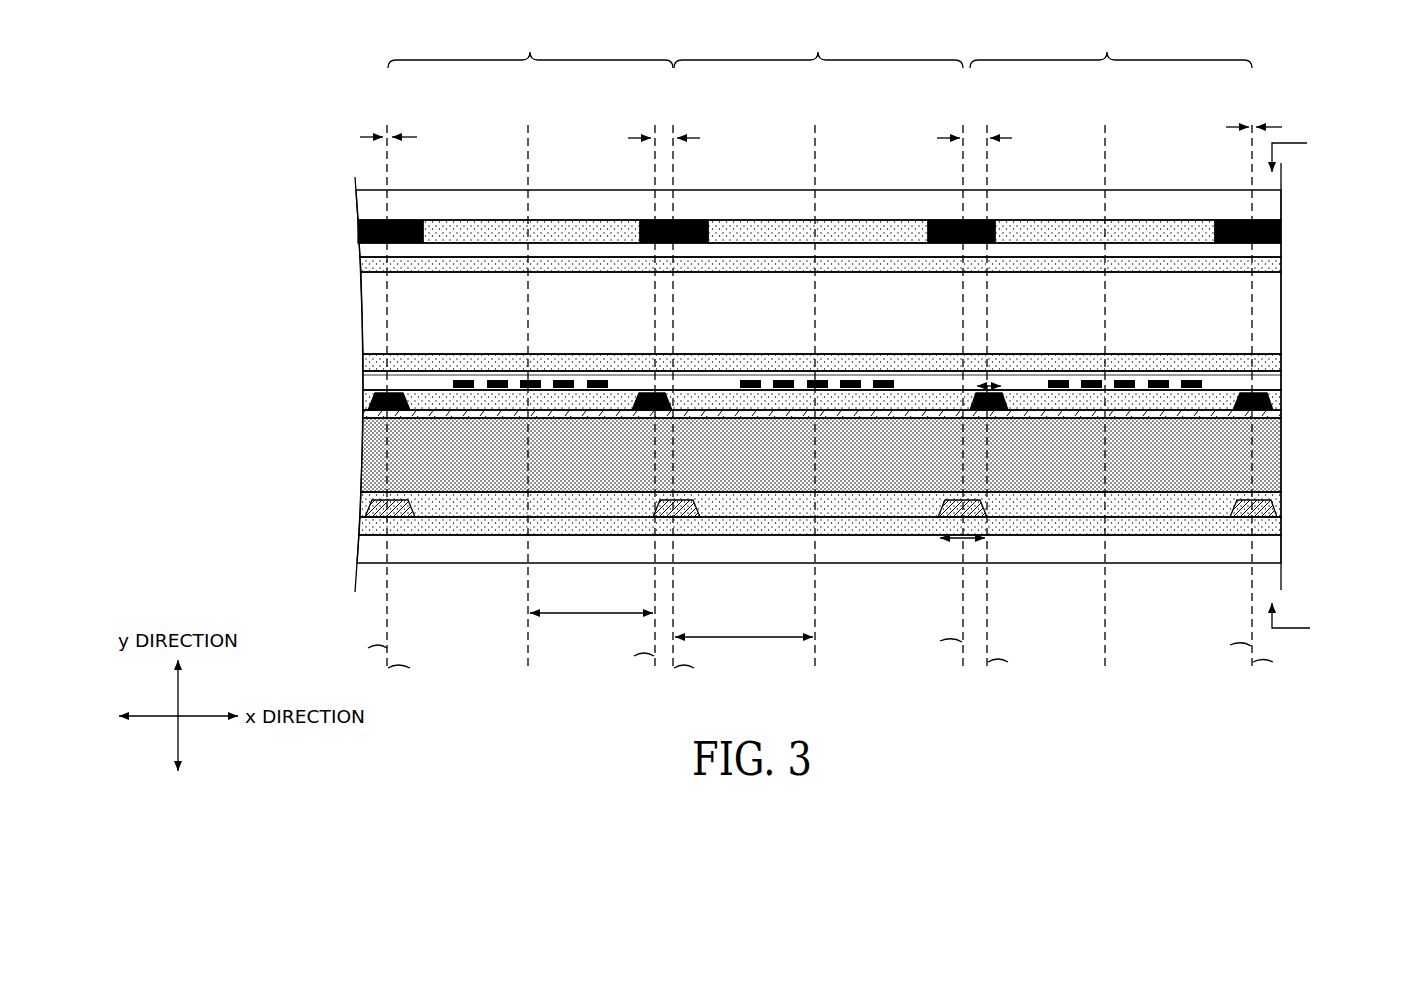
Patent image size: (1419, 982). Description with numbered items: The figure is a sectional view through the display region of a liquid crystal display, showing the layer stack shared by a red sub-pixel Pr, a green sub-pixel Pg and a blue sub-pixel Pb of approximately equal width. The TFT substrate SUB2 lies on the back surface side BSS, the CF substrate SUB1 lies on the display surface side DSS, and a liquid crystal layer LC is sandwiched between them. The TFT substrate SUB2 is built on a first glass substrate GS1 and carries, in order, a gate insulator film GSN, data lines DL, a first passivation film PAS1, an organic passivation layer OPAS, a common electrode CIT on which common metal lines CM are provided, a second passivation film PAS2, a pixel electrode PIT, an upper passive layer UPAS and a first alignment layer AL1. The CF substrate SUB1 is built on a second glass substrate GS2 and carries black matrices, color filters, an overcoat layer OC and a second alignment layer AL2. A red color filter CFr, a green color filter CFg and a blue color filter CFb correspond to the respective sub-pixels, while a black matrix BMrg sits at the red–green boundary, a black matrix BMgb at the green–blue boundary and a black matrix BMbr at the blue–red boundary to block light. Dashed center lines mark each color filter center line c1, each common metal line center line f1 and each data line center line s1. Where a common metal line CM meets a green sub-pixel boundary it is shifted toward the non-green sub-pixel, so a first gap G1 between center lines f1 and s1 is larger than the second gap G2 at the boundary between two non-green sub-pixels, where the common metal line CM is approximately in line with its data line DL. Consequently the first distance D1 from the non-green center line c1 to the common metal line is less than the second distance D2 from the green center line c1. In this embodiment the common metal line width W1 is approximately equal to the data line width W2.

The CF substrate SUB1 is at (801, 213).
The liquid crystal layer LC is at (328, 274).
The TFT substrate SUB2 is at (810, 467).
The second glass substrate GS2 is at (1270, 205).
The overcoat layer OC is at (1268, 248).
The second alignment layer AL2 is at (1268, 265).
The first alignment layer AL1 is at (1268, 356).
The upper passive layer UPAS is at (1272, 378).
The second passivation film PAS2 is at (1279, 400).
The organic passivation layer OPAS is at (1282, 468).
The first passivation film PAS1 is at (1282, 498).
The gate insulator film GSN is at (1282, 526).
The first glass substrate GS1 is at (1282, 548).
The display surface side DSS is at (1310, 152).
The back surface side BSS is at (1309, 622).
The black matrix BMbr is at (406, 221).
The black matrix BMrg is at (703, 221).
The black matrix BMgb is at (934, 219).
The red color filter CFr is at (553, 227).
The green color filter CFg is at (843, 222).
The blue color filter CFb is at (1079, 227).
The pixel electrode PIT is at (463, 379).
The common electrode CIT is at (609, 409).
The common metal line CM is at (642, 392).
The data line DL is at (682, 518).
The common metal line width W1 is at (991, 384).
The data line width W2 is at (969, 546).
The first distance D1 is at (591, 632).
The second distance D2 is at (744, 654).
The first gap G1 is at (820, 384).
The second gap G2 is at (821, 384).
The center line of color filter c1 is at (817, 384).
The center line of common metal line f1 is at (802, 658).
The center line of data line s1 is at (840, 660).
The red sub-pixel Pr is at (530, 44).
The green sub-pixel Pg is at (818, 44).
The blue sub-pixel Pb is at (1111, 44).